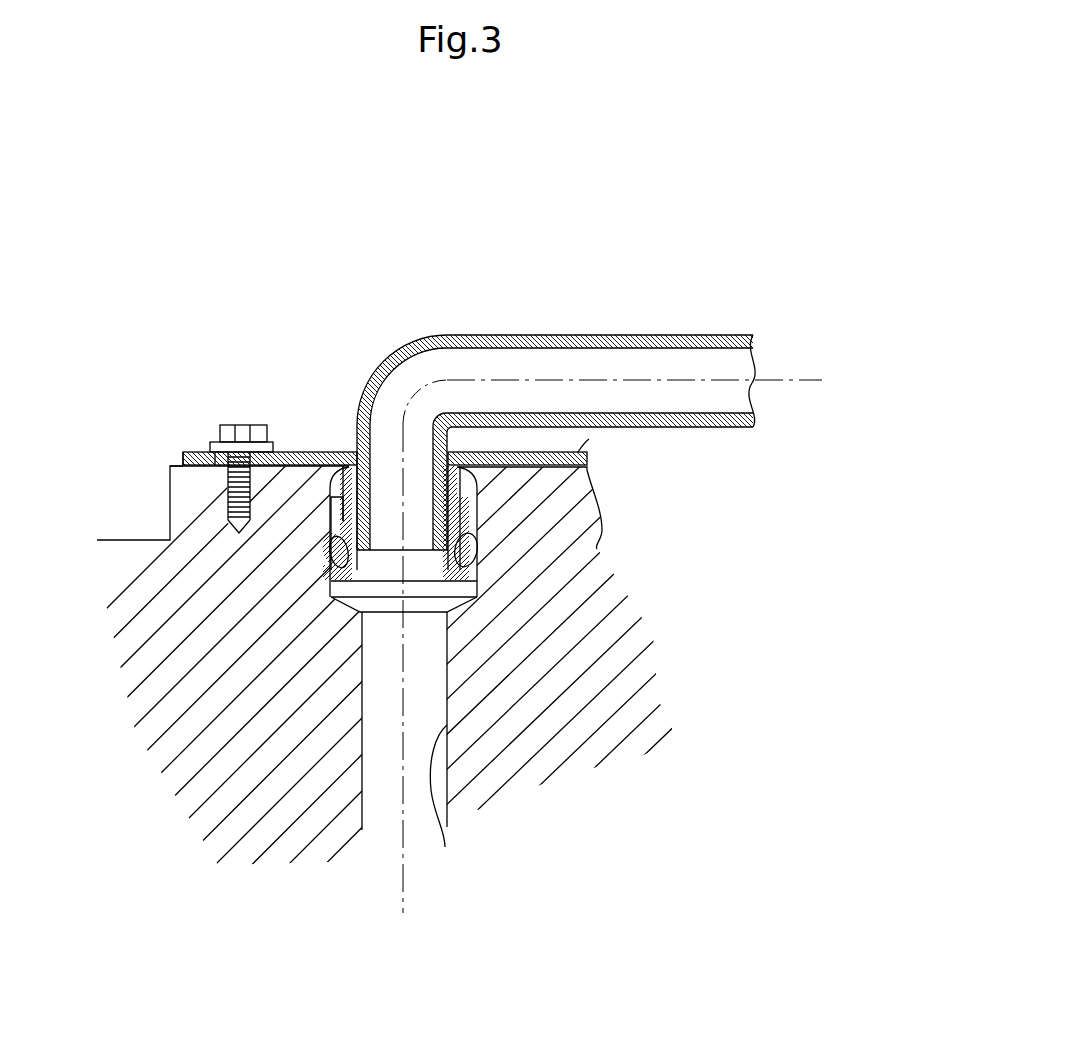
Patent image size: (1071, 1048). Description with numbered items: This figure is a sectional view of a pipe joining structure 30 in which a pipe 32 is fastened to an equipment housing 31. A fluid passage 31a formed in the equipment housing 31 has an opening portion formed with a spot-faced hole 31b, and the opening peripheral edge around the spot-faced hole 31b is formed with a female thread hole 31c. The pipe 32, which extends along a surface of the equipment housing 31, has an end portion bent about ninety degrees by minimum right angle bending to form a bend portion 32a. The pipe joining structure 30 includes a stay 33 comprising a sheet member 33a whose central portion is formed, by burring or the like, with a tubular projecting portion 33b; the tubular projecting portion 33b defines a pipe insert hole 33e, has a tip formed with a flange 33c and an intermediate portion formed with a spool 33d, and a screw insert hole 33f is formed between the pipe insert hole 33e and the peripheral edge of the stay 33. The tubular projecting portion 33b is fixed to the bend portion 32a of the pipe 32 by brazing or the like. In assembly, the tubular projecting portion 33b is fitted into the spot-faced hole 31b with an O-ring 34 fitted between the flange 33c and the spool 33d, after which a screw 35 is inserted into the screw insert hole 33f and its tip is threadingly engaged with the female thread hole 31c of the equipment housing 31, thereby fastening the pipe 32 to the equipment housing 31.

The pipe joining structure 30 is at (350, 376).
The equipment housing 31 is at (580, 527).
The fluid passage 31a is at (445, 847).
The spot-faced hole 31b is at (330, 523).
The female thread hole 31c is at (220, 485).
The pipe 32 is at (573, 334).
The bend portion 32a is at (368, 440).
The stay 33 is at (587, 440).
The sheet member 33a is at (322, 450).
The tubular projecting portion 33b is at (340, 484).
The flange 33c is at (330, 597).
The spool 33d is at (473, 523).
The pipe insert hole 33e is at (455, 450).
The screw insert hole 33f is at (213, 453).
The O-ring 34 is at (477, 562).
The screw 35 is at (233, 425).